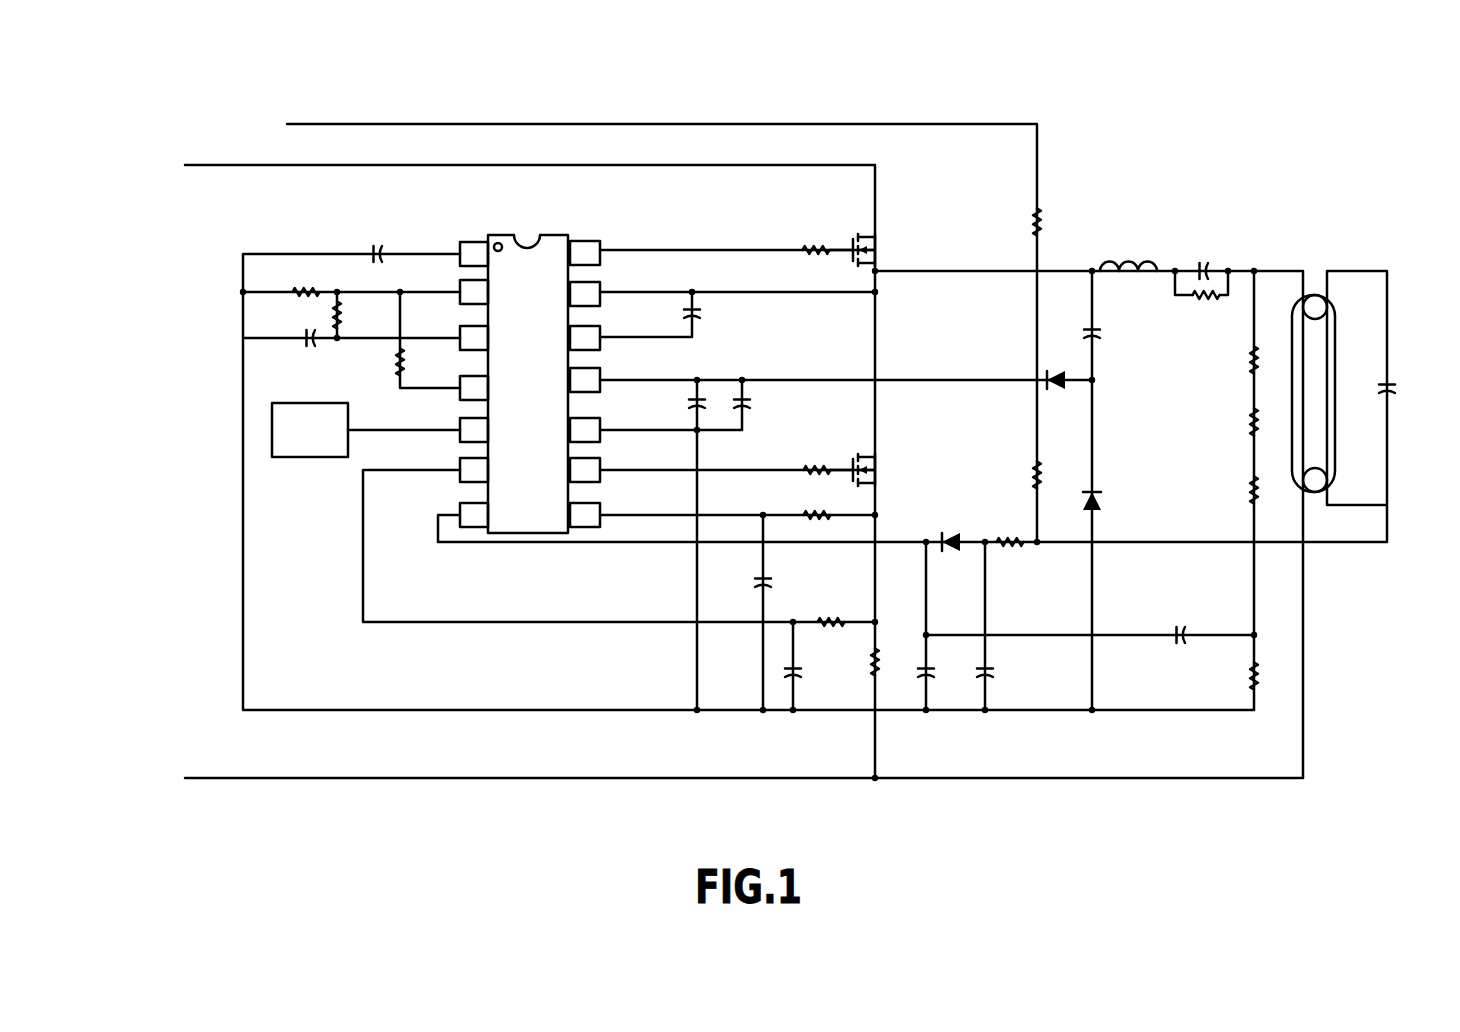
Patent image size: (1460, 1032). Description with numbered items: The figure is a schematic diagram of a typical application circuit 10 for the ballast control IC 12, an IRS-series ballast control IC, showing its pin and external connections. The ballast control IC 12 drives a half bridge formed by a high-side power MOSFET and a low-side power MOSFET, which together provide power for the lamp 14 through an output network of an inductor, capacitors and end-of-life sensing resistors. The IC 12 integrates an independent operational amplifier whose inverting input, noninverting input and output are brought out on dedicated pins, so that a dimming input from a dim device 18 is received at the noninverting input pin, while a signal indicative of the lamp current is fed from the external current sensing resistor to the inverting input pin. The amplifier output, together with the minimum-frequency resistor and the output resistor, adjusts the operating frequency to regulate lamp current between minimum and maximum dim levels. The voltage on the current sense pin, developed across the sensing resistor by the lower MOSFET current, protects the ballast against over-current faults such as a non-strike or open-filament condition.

The circuit 10 is at (1158, 110).
The ballast control IC 12 is at (553, 235).
The lamp 14 is at (1350, 357).
The dim device 18 is at (272, 416).